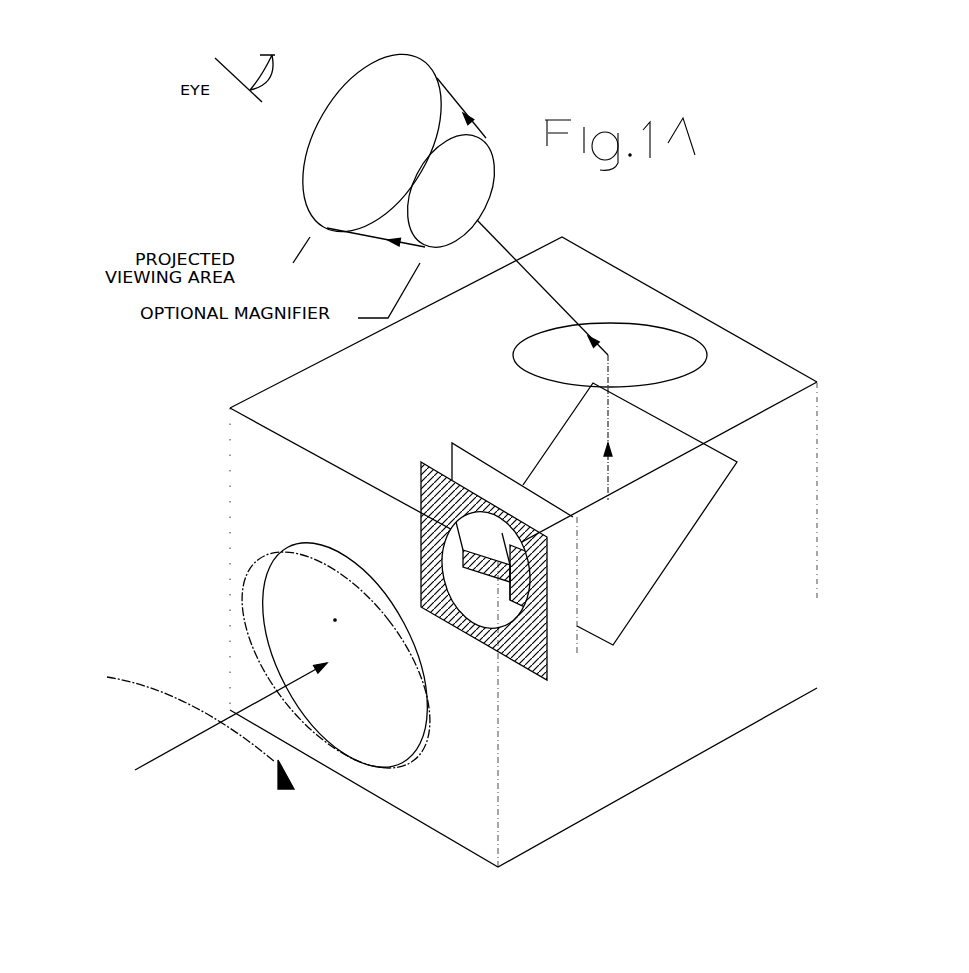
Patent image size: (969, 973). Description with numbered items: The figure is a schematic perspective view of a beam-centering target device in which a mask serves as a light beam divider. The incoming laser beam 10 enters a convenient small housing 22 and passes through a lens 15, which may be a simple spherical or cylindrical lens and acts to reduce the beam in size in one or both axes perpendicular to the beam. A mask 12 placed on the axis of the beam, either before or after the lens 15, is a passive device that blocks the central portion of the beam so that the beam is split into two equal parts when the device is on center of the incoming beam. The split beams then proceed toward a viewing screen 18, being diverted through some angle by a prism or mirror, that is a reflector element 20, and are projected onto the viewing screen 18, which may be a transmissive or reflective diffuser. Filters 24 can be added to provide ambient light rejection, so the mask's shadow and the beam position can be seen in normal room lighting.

The incoming laser beam 10 is at (183, 758).
The mask 12 is at (560, 689).
The lens 15 is at (420, 768).
The viewing screen 18 is at (642, 318).
The reflector element 20 is at (658, 617).
The housing 22 is at (228, 390).
The filters 24 is at (553, 647).